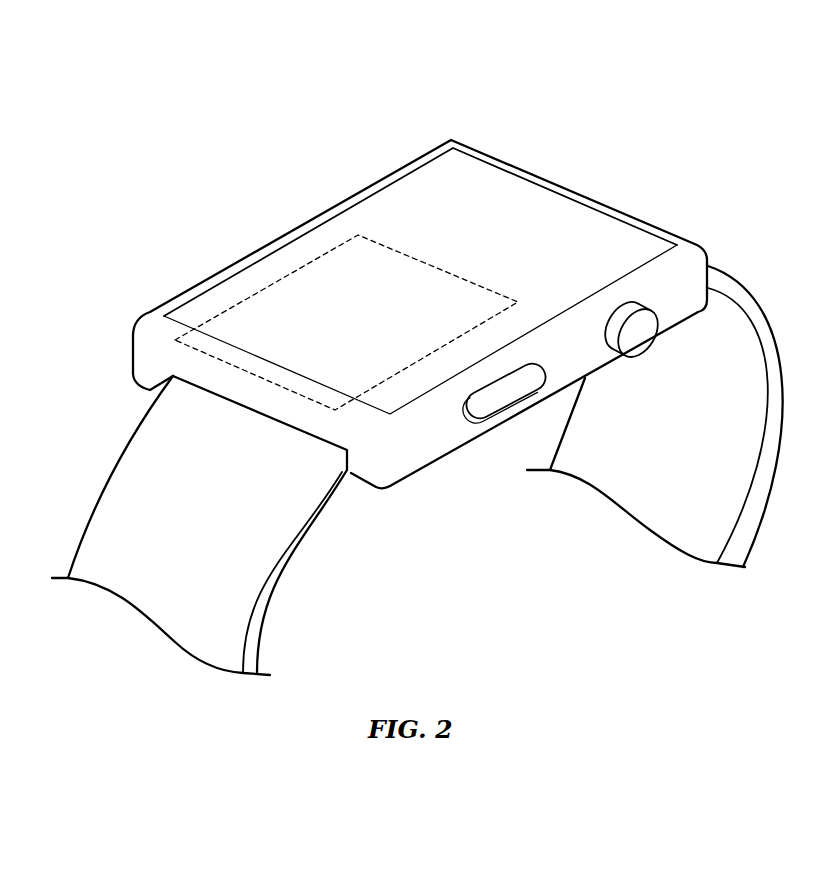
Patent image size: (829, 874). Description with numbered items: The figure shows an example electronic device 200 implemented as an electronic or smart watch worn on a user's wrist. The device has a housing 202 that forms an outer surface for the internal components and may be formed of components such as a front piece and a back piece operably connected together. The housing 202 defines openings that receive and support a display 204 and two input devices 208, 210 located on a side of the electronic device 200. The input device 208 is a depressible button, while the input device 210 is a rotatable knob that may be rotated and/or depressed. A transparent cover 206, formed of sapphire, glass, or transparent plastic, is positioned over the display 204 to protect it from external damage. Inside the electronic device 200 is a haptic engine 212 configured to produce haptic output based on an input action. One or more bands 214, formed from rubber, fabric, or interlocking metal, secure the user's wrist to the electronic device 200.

The electronic device 200 is at (208, 52).
The housing 202 is at (133, 358).
The display 204 is at (325, 221).
The cover 206 is at (381, 208).
The input device 208 is at (500, 425).
The input device 210 is at (645, 285).
The haptic engine 212 is at (263, 290).
The bands 214 is at (102, 477).